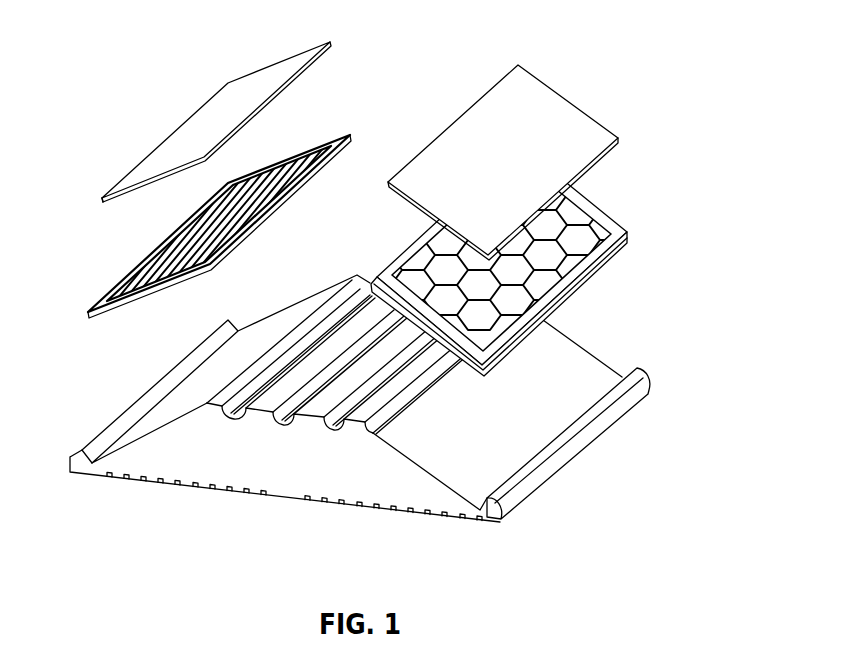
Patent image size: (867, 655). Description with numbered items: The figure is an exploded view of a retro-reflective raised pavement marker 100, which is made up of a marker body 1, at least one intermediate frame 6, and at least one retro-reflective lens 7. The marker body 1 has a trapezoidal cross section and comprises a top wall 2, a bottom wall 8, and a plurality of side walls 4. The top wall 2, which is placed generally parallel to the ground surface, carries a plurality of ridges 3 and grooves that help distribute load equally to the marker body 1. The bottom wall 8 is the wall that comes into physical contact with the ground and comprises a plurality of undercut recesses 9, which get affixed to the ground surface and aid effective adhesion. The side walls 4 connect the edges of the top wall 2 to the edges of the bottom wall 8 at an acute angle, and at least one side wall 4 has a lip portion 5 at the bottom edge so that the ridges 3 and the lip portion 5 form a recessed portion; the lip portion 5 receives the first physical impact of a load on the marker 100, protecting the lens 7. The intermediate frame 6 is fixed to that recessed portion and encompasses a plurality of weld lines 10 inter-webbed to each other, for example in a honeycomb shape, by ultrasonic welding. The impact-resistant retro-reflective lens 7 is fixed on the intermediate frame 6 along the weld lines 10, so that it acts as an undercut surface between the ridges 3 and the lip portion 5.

The retro-reflective raised pavement marker 100 is at (385, 282).
The marker body 1 is at (388, 386).
The top wall 2 is at (308, 417).
The ridges 3 is at (358, 273).
The side walls 4 is at (567, 337).
The lip portion 5 is at (645, 381).
The intermediate frame 6 is at (92, 334).
The retro-reflective lens 7 is at (563, 96).
The bottom wall 8 is at (288, 495).
The undercut recesses 9 is at (224, 491).
The weld lines 10 is at (607, 223).